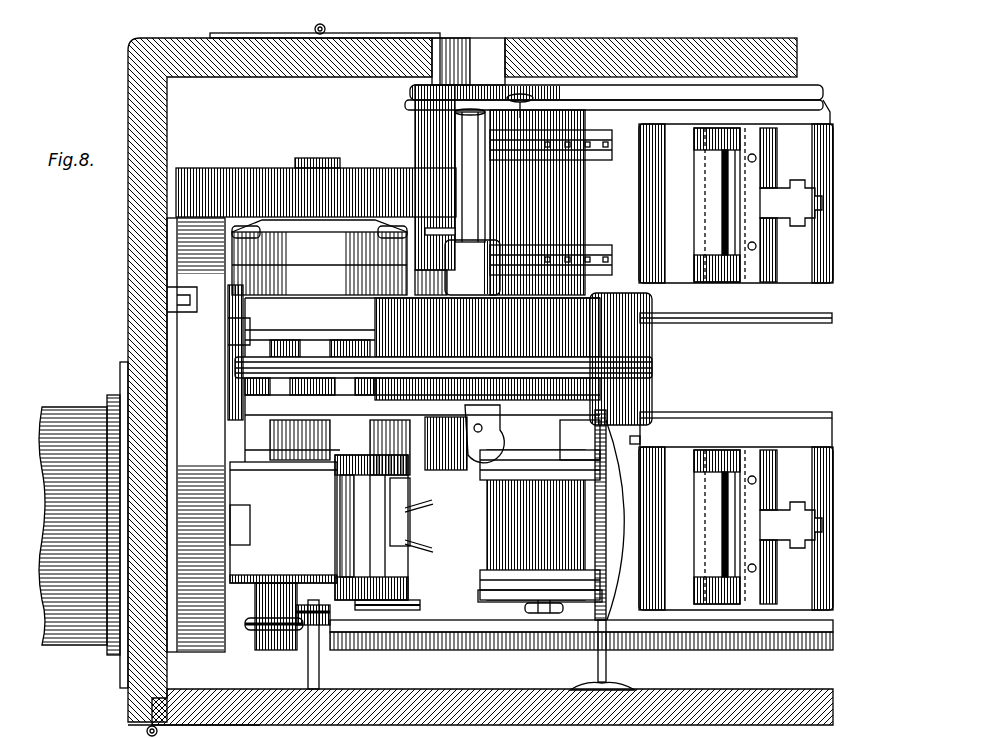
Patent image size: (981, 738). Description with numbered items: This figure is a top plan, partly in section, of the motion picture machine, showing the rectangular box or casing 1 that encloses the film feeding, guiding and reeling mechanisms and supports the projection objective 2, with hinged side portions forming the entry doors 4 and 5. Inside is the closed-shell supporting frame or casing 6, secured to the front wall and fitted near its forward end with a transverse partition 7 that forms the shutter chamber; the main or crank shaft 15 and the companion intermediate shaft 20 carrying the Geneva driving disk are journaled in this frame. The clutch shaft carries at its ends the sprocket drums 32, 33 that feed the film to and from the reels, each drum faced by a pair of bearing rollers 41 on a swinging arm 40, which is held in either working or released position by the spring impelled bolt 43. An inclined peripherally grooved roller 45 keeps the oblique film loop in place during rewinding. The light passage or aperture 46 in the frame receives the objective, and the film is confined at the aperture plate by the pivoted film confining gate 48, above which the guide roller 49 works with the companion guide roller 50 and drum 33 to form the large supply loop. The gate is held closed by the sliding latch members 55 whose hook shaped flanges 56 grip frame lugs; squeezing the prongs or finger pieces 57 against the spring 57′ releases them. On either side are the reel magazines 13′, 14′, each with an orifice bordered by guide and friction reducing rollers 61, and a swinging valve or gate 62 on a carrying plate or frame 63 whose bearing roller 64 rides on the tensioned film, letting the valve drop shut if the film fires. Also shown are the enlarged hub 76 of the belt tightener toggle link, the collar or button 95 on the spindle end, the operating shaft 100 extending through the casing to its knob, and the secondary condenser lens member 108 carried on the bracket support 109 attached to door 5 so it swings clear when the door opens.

The box or casing 1 is at (135, 232).
The projection objective 2 is at (79, 525).
The entry door 4 is at (482, 689).
The entry door 5 is at (547, 50).
The supporting frame or casing 6 is at (658, 342).
The transverse partition 7 is at (222, 462).
The reel magazine 13′ is at (462, 615).
The reel magazine 14′ is at (428, 144).
The main or crank shaft 15 is at (458, 118).
The intermediate shaft 20 is at (320, 158).
The sprocket drum 32 is at (540, 498).
The sprocket drum 33 is at (598, 245).
The swinging arm 40 is at (488, 590).
The bearing roller 41 is at (540, 550).
The spring impelled bolt 43 is at (522, 96).
The peripherally grooved roller 45 is at (492, 395).
The light passage or aperture 46 is at (283, 556).
The film confining gate 48 is at (392, 620).
The guide roller 49 is at (382, 521).
The companion guide roller 50 is at (342, 502).
The latch member 55 is at (398, 480).
The hook shaped flange 56 is at (368, 612).
The prong or finger piece 57 is at (432, 548).
The spring 57′ is at (421, 516).
The guide and friction reducing roller 61 is at (768, 172).
The swinging valve or gate 62 is at (750, 200).
The carrying plate or frame 63 is at (791, 364).
The bearing roller 64 is at (702, 190).
The enlarged hub 76 is at (580, 440).
The collar or button 95 is at (640, 440).
The operating shaft 100 is at (310, 668).
The condenser lens member 108 is at (610, 515).
The bracket support 109 is at (606, 662).